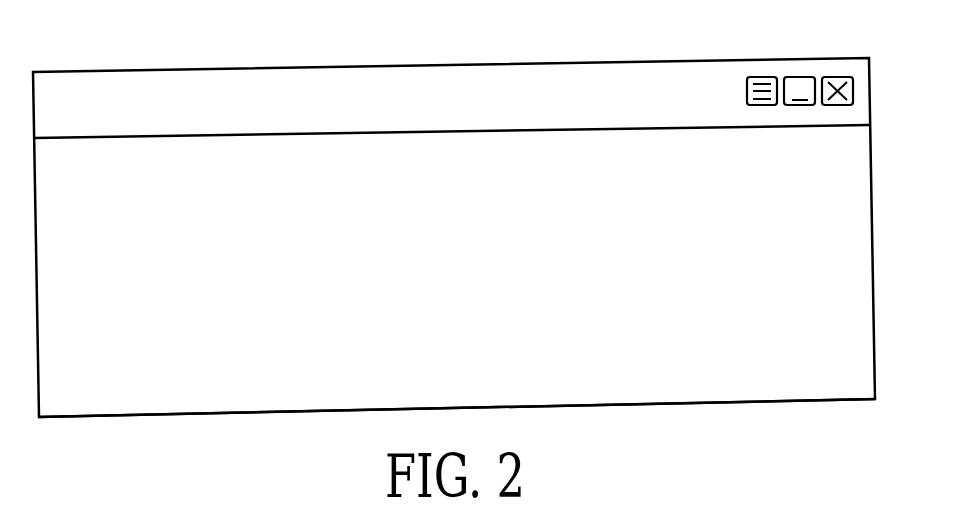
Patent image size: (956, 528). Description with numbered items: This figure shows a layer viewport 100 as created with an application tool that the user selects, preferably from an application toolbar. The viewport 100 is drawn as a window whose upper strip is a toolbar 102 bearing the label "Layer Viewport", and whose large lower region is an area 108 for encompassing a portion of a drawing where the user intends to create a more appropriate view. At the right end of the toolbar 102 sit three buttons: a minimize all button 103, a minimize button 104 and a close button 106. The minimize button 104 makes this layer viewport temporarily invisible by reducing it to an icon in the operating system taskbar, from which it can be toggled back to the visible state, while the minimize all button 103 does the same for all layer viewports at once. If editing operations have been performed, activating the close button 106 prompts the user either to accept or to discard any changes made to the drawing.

The layer viewport 100 is at (433, 34).
The toolbar 102 is at (106, 72).
The minimize all button 103 is at (762, 77).
The minimize button 104 is at (801, 77).
The close button 106 is at (840, 77).
The area 108 is at (712, 403).